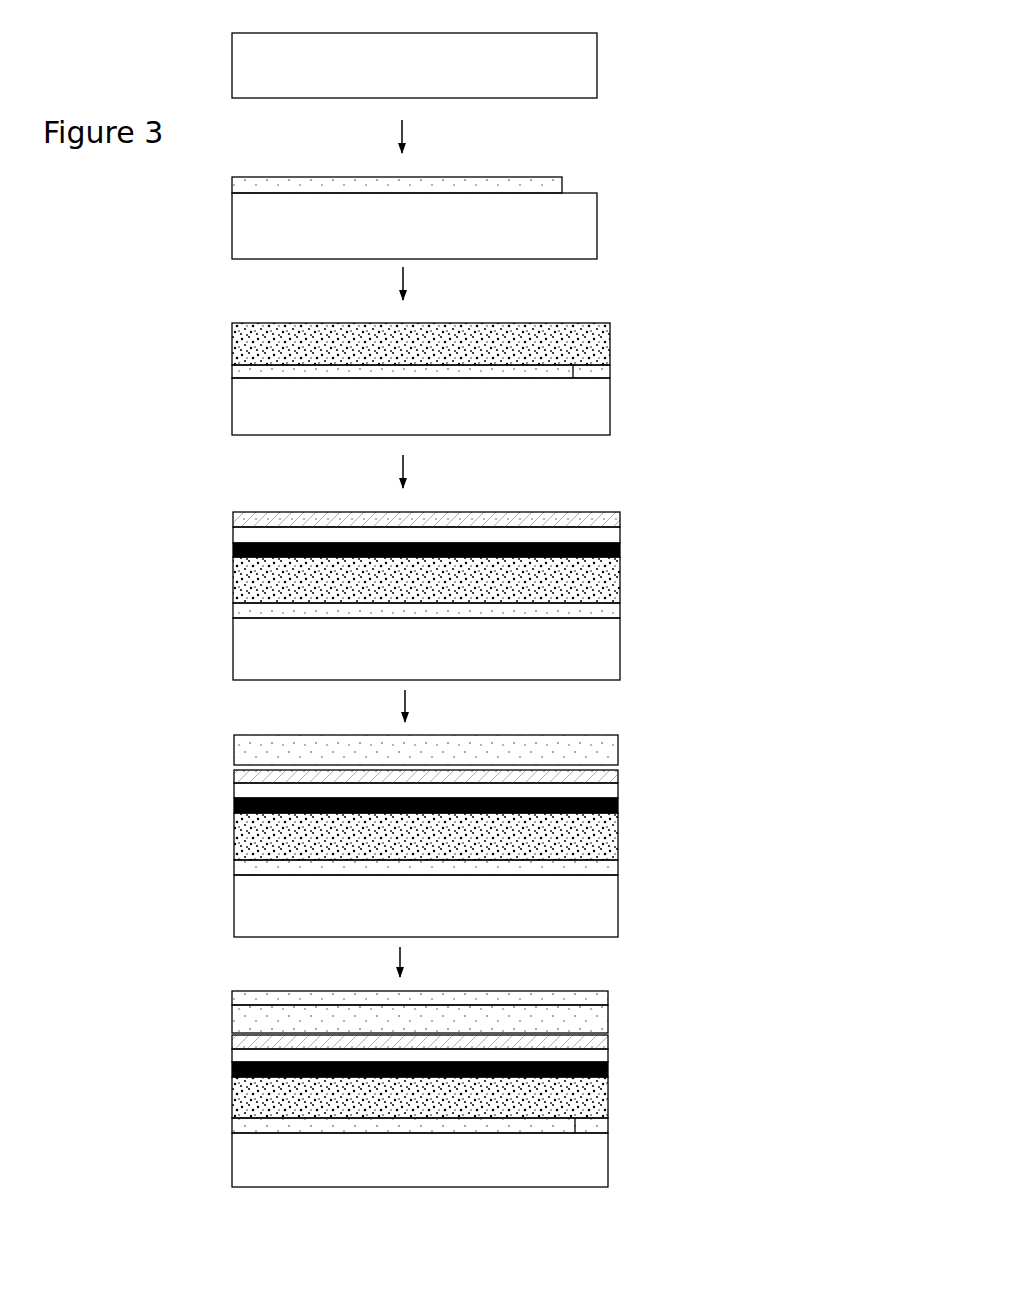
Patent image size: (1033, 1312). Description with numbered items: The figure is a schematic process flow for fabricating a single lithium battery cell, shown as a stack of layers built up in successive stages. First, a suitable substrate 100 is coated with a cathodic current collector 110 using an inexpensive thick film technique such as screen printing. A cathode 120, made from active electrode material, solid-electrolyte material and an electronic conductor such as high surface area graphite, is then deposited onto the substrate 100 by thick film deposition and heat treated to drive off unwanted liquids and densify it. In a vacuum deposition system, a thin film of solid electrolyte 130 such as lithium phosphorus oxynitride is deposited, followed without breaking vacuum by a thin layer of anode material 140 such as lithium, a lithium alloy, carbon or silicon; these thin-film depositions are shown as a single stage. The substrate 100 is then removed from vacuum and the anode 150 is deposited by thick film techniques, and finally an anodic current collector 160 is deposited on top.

The substrate 100 is at (426, 610).
The cathodic current collector 110 is at (563, 175).
The cathode 120 is at (590, 332).
The solid electrolyte 130 is at (245, 535).
The anode material 140 is at (623, 510).
The anode 150 is at (265, 745).
The anodic current collector 160 is at (610, 988).